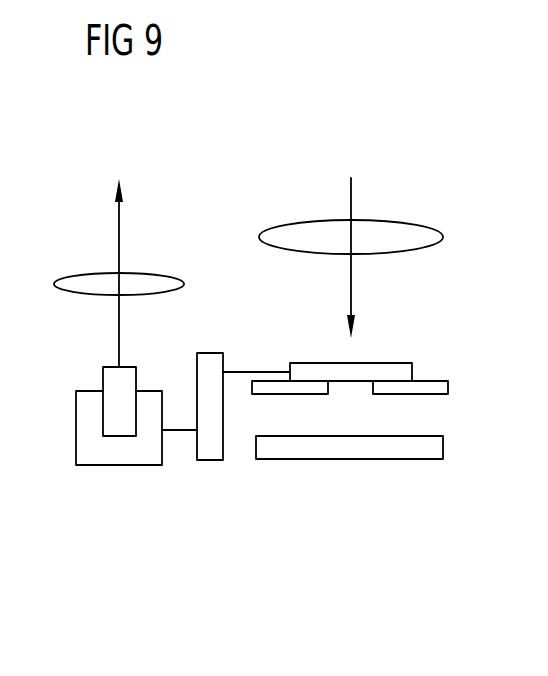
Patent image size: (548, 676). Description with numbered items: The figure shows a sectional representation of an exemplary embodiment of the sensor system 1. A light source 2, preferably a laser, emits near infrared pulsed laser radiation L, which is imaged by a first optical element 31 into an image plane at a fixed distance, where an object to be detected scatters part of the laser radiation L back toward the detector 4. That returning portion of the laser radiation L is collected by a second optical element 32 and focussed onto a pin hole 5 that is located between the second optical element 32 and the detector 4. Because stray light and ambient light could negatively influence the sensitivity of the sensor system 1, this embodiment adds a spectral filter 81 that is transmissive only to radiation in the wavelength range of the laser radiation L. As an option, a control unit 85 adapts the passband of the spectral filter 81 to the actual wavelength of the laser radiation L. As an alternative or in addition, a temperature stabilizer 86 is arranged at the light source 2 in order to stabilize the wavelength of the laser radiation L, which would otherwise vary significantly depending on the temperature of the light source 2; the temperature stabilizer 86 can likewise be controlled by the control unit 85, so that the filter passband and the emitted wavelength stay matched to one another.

The sensor system 1 is at (309, 545).
The light source 2 is at (107, 380).
The detector 4 is at (274, 457).
The pin hole 5 is at (383, 388).
The first optical element 31 is at (176, 276).
The second optical element 32 is at (430, 236).
The spectral filter 81 is at (398, 372).
The control unit 85 is at (210, 453).
The temperature stabilizer 86 is at (125, 455).
The laser radiation L is at (121, 215).